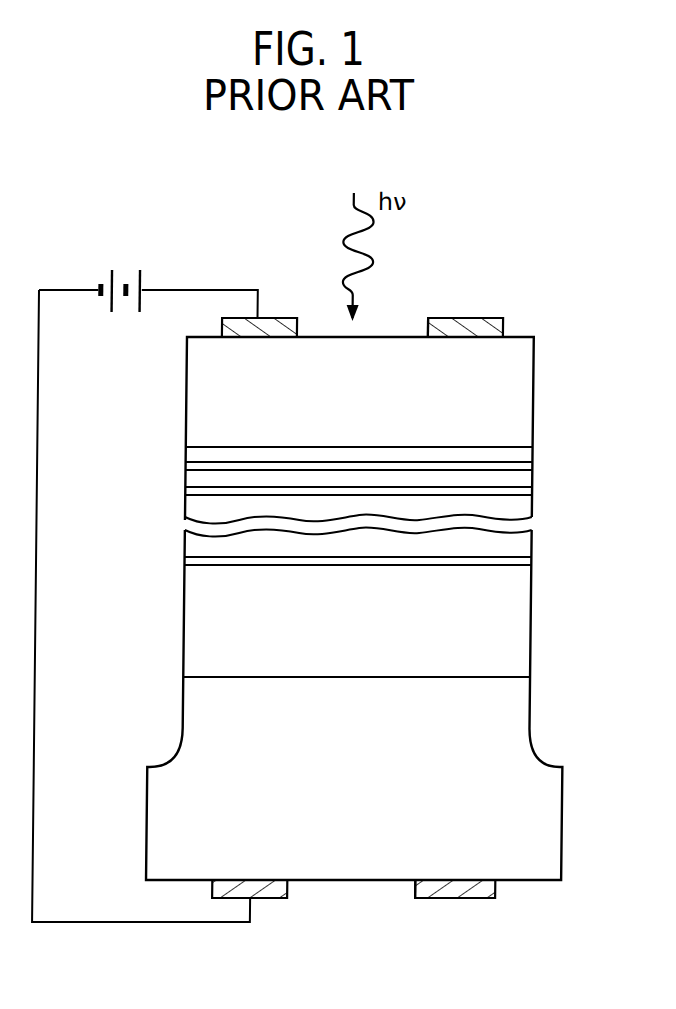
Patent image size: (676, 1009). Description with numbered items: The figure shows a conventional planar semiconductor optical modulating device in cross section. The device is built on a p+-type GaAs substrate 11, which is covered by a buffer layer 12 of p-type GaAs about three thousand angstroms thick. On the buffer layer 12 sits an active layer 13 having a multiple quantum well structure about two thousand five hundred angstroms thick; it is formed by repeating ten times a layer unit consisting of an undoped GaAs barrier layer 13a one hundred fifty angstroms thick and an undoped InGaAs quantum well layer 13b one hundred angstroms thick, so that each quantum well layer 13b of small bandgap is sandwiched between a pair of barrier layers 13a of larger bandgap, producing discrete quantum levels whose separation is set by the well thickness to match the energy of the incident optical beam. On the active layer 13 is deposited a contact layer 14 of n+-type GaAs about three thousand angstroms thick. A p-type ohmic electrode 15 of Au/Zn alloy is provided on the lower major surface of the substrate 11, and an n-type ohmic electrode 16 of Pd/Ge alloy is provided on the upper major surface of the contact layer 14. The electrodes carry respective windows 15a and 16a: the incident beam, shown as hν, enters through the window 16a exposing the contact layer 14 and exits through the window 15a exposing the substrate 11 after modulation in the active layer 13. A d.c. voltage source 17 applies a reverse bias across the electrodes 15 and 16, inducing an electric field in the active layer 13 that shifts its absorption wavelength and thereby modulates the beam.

The substrate 11 is at (172, 813).
The buffer layer 12 is at (207, 633).
The active layer 13 is at (180, 445).
The barrier layer 13a is at (536, 565).
The quantum well layer 13b is at (531, 483).
The contact layer 14 is at (206, 403).
The p-type ohmic electrode 15 is at (278, 900).
The window 15a is at (422, 893).
The n-type ohmic electrode 16 is at (286, 318).
The window 16a is at (430, 320).
The d.c. voltage source 17 is at (131, 268).